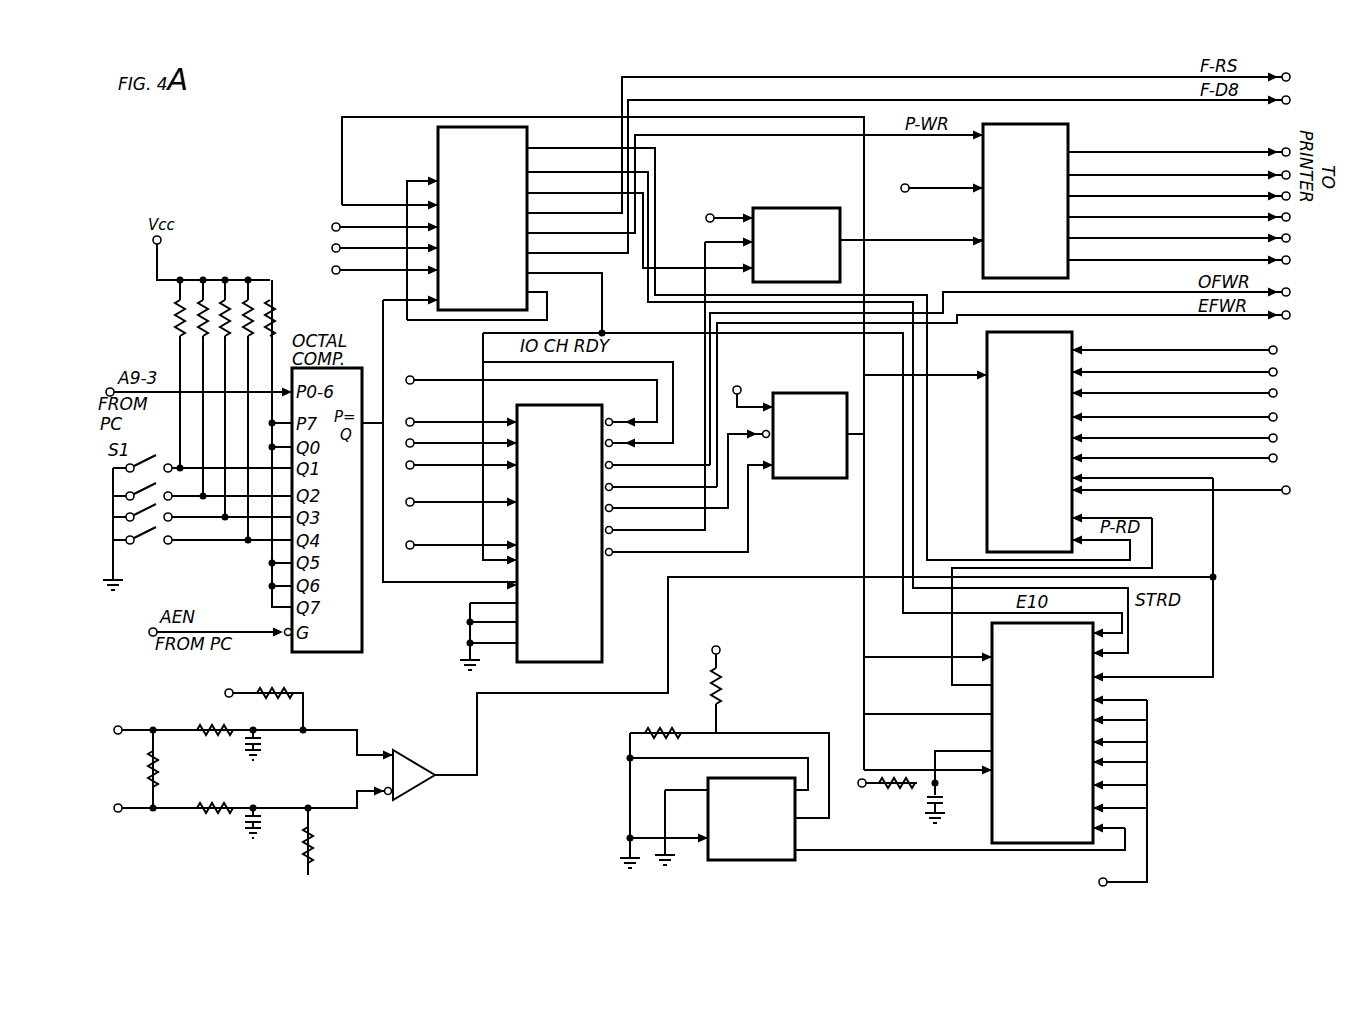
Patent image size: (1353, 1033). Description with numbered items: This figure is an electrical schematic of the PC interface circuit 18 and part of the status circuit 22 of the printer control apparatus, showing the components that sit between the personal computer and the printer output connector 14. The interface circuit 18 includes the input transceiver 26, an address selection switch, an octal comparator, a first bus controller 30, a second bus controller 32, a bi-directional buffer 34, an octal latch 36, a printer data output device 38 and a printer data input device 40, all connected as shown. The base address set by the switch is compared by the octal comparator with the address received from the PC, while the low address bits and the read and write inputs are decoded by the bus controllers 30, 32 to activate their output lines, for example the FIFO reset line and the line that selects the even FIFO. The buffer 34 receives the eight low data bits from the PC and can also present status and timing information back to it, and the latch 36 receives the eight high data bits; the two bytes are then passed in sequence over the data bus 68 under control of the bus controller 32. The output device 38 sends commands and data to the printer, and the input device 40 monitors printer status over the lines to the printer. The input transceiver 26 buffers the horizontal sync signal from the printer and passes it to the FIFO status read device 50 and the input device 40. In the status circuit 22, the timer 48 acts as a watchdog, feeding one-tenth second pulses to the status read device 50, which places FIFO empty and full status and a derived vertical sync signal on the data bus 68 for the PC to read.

The output connector 14 is at (1286, 74).
The PC interface circuit 18 is at (315, 216).
The status circuit 22 is at (1170, 760).
The input transceiver 26 is at (415, 787).
The bus controller 30 is at (450, 127).
The bus controller 32 is at (558, 405).
The bi-directional buffer 34 is at (747, 279).
The octal latch 36 is at (822, 384).
The printer data output device 38 is at (1034, 113).
The printer data input device 40 is at (980, 492).
The timer 48 is at (708, 784).
The FIFO status read device 50 is at (992, 636).
The data bus 68 is at (864, 173).